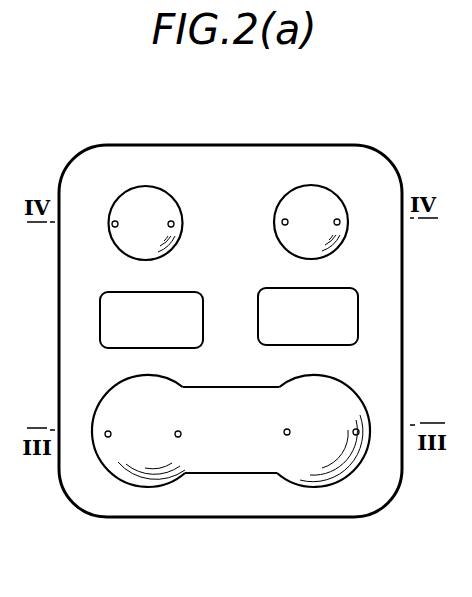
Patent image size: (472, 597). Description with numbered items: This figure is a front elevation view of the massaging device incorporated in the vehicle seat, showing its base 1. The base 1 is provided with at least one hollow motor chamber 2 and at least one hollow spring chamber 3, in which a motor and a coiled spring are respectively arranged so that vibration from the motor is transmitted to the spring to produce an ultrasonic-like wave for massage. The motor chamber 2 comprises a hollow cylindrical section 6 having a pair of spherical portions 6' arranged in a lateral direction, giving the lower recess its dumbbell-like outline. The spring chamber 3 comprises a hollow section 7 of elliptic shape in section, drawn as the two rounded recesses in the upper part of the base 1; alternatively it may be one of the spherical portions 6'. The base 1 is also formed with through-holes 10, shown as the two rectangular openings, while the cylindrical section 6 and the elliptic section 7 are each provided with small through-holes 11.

The base 1 is at (227, 158).
The motor chamber 2 is at (231, 464).
The spring chamber 3 is at (220, 180).
The hollow cylindrical section 6 is at (231, 470).
The spherical portions 6' is at (231, 464).
The hollow elliptic section 7 is at (123, 191).
The through-holes 10 is at (100, 321).
The small through-holes 11 is at (112, 223).